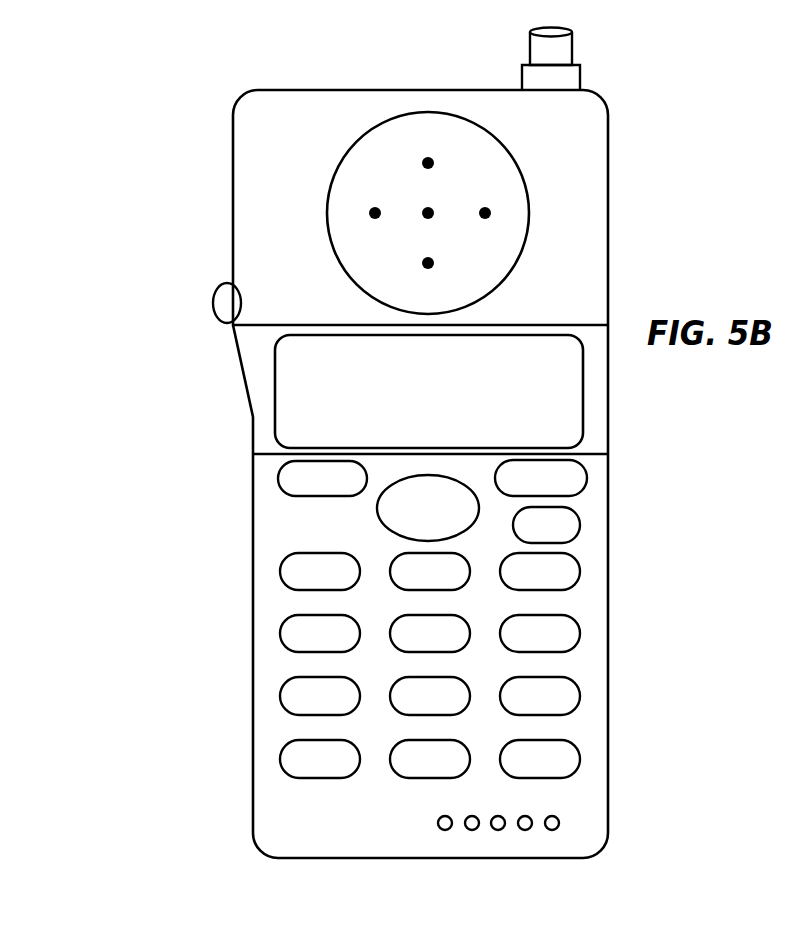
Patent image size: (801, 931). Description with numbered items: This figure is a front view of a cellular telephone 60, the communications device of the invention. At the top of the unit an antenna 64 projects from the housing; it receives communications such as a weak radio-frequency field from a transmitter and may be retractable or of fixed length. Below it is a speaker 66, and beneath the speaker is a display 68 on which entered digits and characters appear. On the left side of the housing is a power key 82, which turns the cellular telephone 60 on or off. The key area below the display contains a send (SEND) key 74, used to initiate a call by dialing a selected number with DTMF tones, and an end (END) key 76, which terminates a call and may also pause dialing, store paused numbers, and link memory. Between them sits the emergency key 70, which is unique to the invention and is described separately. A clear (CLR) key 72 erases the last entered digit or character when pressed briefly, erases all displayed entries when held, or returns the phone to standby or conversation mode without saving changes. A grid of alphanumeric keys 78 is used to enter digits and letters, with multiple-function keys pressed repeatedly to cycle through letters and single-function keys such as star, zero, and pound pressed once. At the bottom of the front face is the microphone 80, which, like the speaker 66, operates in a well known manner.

The cellular telephone 60 is at (654, 273).
The antenna 64 is at (540, 47).
The speaker 66 is at (485, 172).
The display 68 is at (565, 380).
The emergency (911) key 70 is at (470, 533).
The clear (CLR) key 72 is at (580, 525).
The send (SEND) key 74 is at (342, 496).
The end (END) key 76 is at (583, 490).
The alphanumeric keys 78 is at (389, 676).
The microphone 80 is at (567, 830).
The power key 82 is at (220, 298).